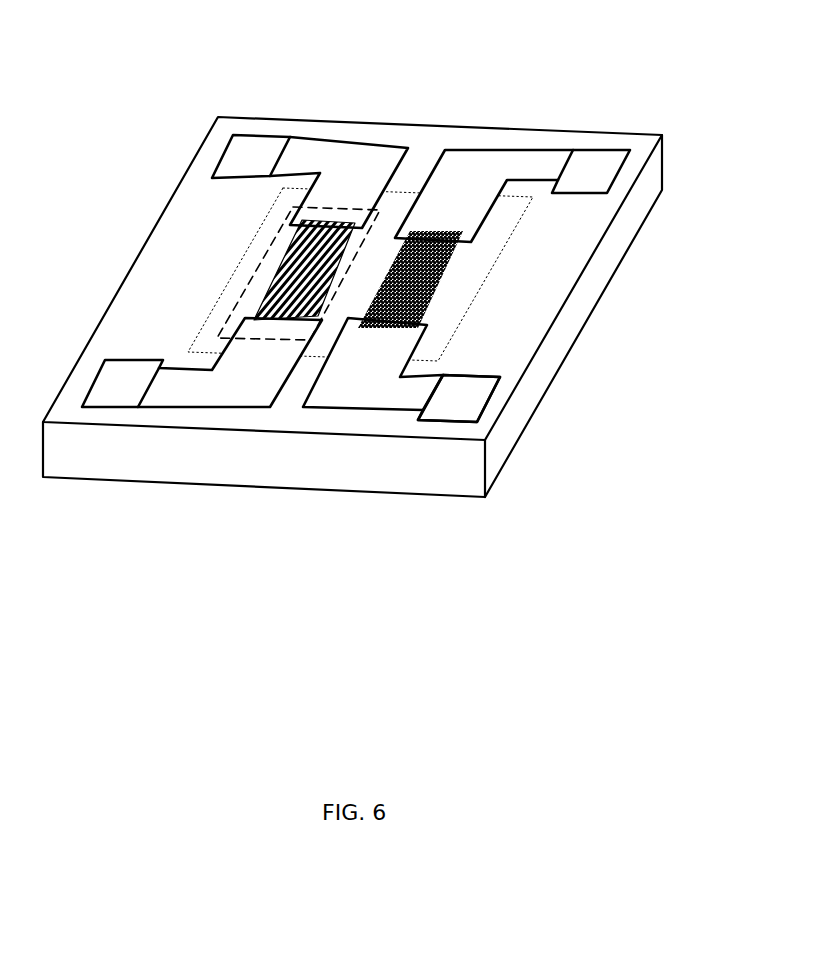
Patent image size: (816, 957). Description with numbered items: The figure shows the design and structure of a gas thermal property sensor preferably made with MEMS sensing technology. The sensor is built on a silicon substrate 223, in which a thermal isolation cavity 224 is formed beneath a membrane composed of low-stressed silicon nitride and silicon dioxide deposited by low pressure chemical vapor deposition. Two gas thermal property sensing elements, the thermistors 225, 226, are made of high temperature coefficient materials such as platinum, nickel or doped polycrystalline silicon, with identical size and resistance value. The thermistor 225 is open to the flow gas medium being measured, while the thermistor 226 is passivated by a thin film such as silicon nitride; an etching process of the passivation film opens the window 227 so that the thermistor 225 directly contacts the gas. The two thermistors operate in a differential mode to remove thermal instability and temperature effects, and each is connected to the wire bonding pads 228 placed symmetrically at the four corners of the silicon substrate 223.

The silicon substrate 223 is at (263, 462).
The thermal isolation cavity 224 is at (463, 258).
The thermistor 225 is at (287, 255).
The thermistor 226 is at (412, 282).
The window 227 is at (340, 207).
The wire bonding pads 228 is at (463, 398).